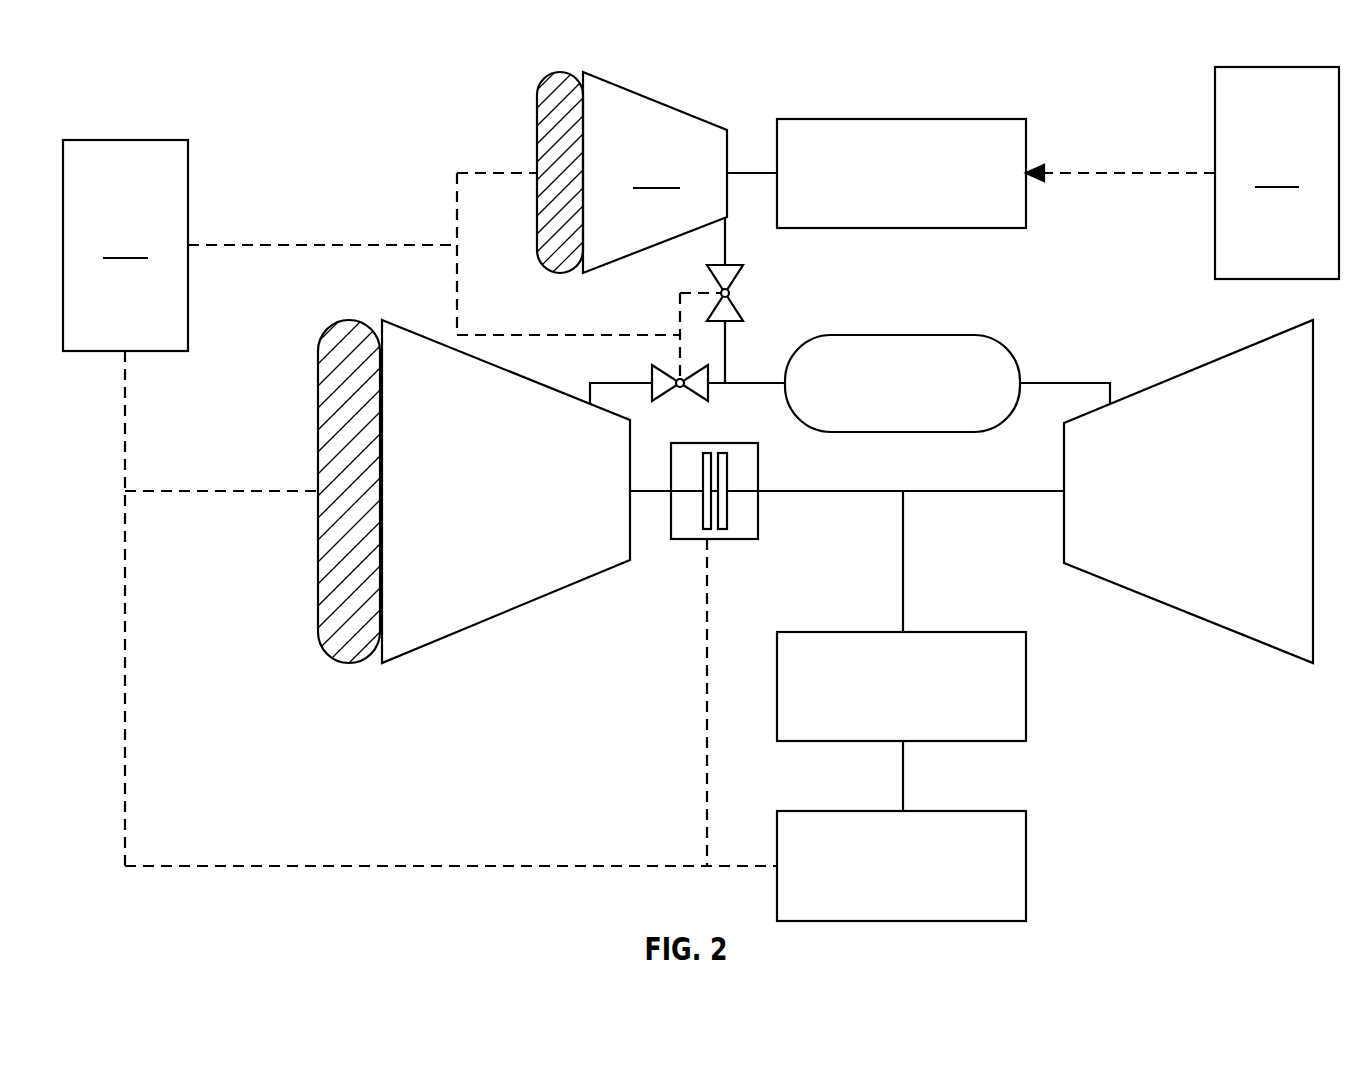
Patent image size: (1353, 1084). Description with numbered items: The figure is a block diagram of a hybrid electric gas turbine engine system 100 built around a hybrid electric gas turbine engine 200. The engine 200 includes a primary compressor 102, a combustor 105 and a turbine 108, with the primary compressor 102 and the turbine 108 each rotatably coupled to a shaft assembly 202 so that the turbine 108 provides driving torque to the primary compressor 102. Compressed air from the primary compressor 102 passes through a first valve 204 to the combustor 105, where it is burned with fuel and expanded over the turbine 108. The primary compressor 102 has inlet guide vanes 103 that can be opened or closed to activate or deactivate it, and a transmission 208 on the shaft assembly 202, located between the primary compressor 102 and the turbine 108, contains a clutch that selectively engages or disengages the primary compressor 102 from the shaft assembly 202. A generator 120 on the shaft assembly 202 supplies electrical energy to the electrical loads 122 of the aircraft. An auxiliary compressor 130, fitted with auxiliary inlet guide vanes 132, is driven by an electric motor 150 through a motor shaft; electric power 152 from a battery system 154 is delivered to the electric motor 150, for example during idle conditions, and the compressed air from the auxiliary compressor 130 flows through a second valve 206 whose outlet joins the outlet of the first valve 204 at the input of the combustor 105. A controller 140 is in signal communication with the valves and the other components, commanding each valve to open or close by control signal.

The hybrid electric gas turbine engine system 100 is at (1110, 75).
The primary compressor 102 is at (415, 656).
The inlet guide vanes 103 is at (333, 593).
The combustor 105 is at (903, 335).
The turbine 108 is at (1243, 640).
The generator 120 is at (960, 632).
The electrical loads 122 is at (960, 811).
The auxiliary compressor 130 is at (658, 95).
The auxiliary inlet guide vanes 132 is at (553, 240).
The controller 140 is at (420, 503).
The electric motor 150 is at (958, 119).
The electric power 152 is at (1118, 173).
The battery system 154 is at (1277, 173).
The hybrid electric gas turbine engine 200 is at (1040, 548).
The shaft assembly 202 is at (950, 491).
The first valve 204 is at (652, 374).
The second valve 206 is at (742, 275).
The transmission 208 is at (735, 548).